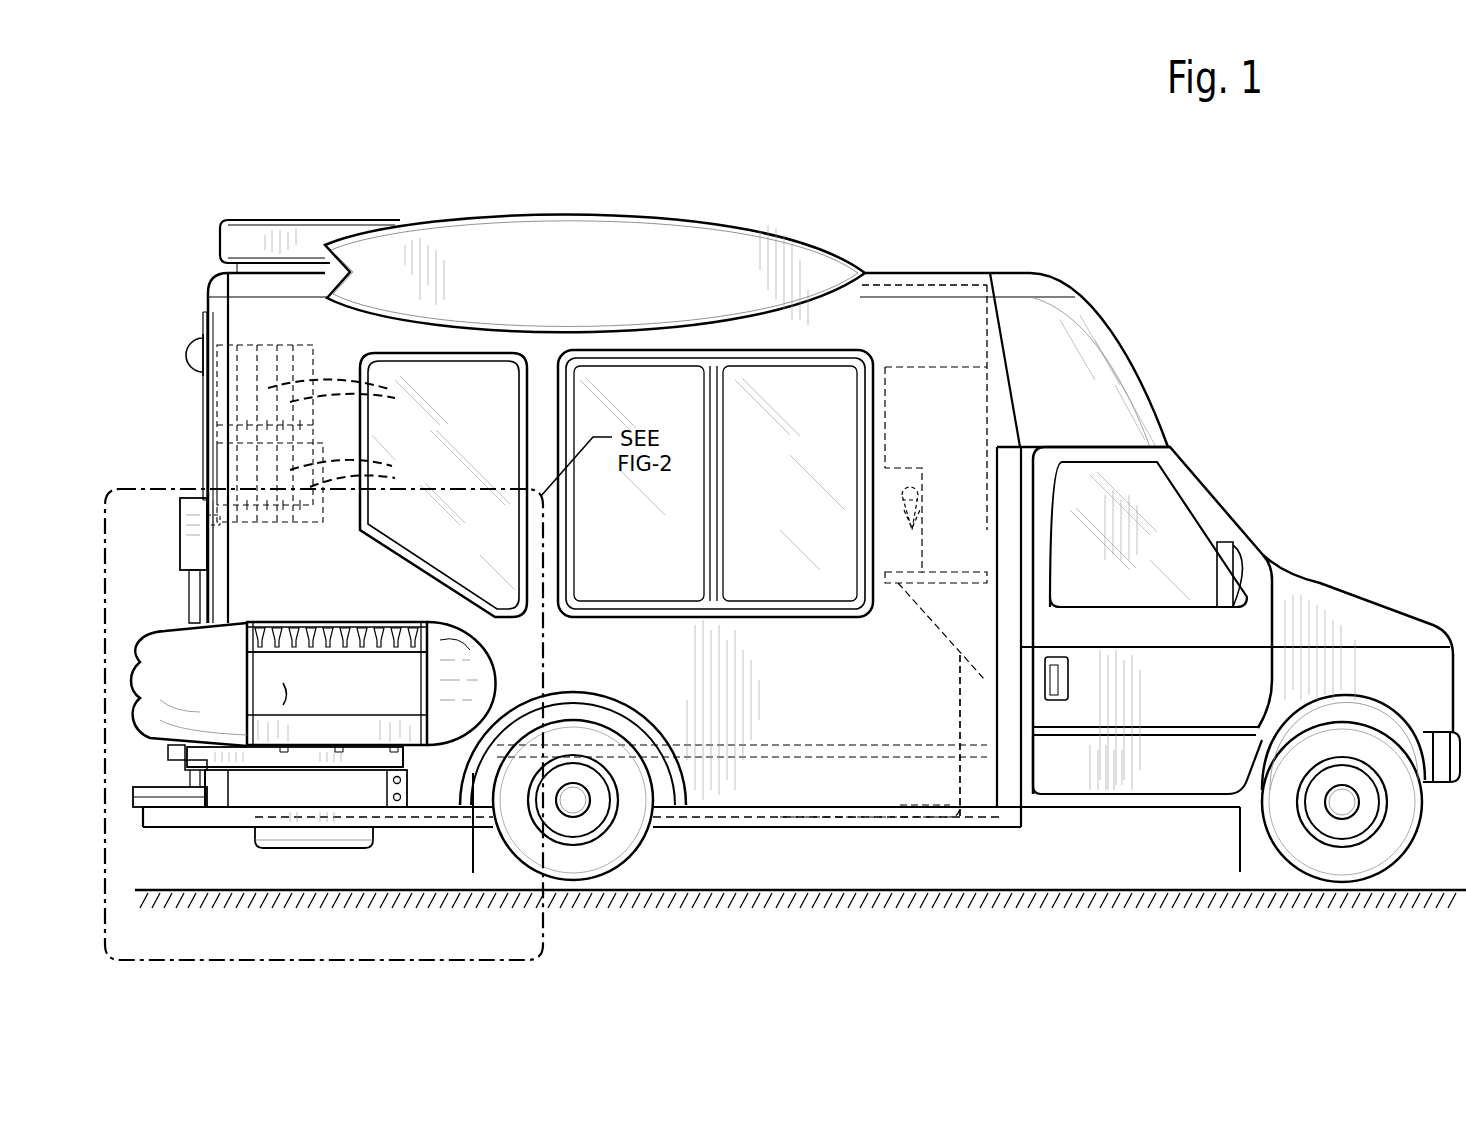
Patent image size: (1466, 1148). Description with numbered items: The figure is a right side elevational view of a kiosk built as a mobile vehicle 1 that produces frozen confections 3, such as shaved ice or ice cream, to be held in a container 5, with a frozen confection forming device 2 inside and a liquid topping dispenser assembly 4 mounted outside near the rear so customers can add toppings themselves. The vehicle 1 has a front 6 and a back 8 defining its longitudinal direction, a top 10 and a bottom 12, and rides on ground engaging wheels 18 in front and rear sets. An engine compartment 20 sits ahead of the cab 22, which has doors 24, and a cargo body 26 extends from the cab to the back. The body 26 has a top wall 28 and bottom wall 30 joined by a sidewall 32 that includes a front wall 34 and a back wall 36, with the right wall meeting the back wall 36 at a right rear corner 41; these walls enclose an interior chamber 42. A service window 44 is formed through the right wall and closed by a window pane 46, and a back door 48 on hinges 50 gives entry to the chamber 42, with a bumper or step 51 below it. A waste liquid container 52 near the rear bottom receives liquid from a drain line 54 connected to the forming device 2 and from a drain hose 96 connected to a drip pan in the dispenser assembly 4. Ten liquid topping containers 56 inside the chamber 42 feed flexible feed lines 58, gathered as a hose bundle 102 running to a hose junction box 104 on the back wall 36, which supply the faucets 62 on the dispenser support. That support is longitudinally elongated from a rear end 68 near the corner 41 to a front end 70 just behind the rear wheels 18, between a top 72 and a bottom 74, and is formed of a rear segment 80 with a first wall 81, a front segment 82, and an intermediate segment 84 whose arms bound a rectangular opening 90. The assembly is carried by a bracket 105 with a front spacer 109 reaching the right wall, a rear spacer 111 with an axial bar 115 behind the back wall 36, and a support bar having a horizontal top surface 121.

The kiosk or vehicle 1 is at (1140, 258).
The frozen confection forming device 2 is at (963, 400).
The frozen confection 3 is at (900, 490).
The liquid topping dispenser assembly 4 is at (497, 648).
The container 5 is at (900, 516).
The front 6 is at (1447, 615).
The back 8 is at (190, 248).
The top 10 is at (883, 250).
The bottom 12 is at (675, 857).
The ground engaging wheels 18 is at (572, 872).
The engine compartment 20 is at (1345, 592).
The cab 22 is at (1205, 490).
The doors 24 is at (1170, 770).
The cargo body or box 26 is at (952, 327).
The top wall 28 is at (927, 273).
The bottom wall 30 is at (885, 752).
The sidewall 32 is at (752, 773).
The front wall 34 is at (1002, 430).
The back wall 36 is at (207, 425).
The right rear corner 41 is at (222, 325).
The interior chamber 42 is at (890, 722).
The service window 44 is at (668, 572).
The window pane 46 is at (618, 575).
The back door 48 is at (203, 393).
The hinges 50 is at (200, 342).
The back bumper or step 51 is at (157, 804).
The waste liquid reservoir or container 52 is at (360, 850).
The drain line 54 is at (937, 817).
The liquid topping containers 56 is at (347, 433).
The feed lines 58 is at (240, 516).
The faucets 62 is at (347, 622).
The rear end 68 is at (137, 665).
The front end 70 is at (497, 678).
The top 72 is at (362, 623).
The bottom 74 is at (415, 748).
The rear segment 80 is at (168, 640).
The first wall 81 is at (210, 596).
The front segment 82 is at (463, 640).
The intermediate segment 84 is at (327, 742).
The rectangular opening 90 is at (283, 683).
The drain hose 96 is at (170, 750).
The hose bundle 102 is at (205, 600).
The hose cover or hose junction box 104 is at (180, 520).
The bracket 105 is at (253, 772).
The front spacer 109 is at (405, 788).
The rear spacer 111 is at (193, 805).
The axial bar 115 is at (190, 778).
The top surface 121 is at (352, 742).